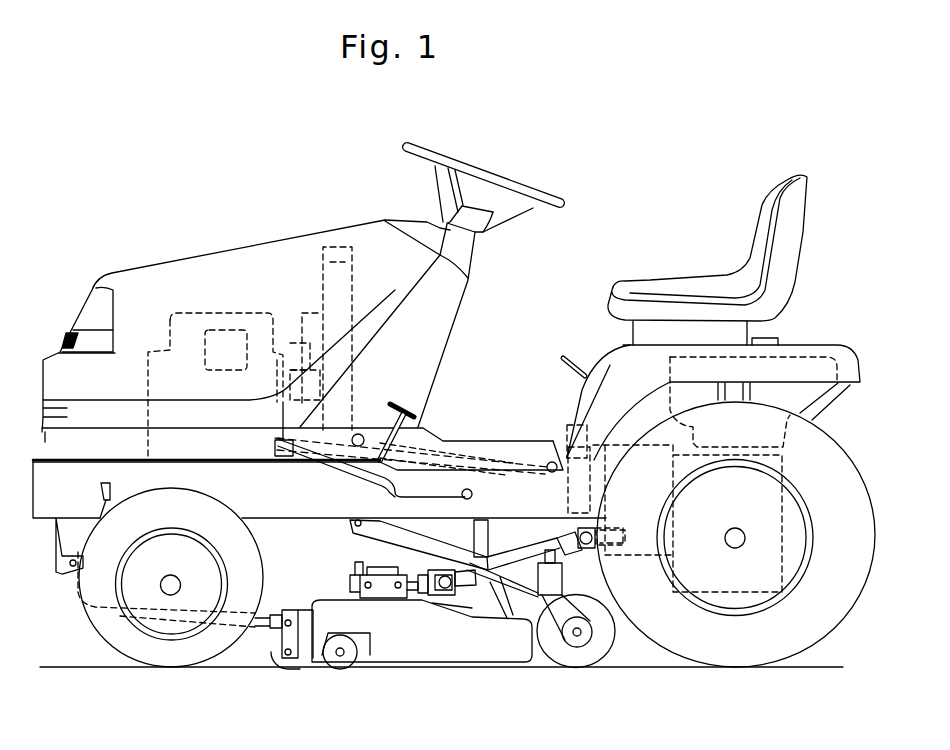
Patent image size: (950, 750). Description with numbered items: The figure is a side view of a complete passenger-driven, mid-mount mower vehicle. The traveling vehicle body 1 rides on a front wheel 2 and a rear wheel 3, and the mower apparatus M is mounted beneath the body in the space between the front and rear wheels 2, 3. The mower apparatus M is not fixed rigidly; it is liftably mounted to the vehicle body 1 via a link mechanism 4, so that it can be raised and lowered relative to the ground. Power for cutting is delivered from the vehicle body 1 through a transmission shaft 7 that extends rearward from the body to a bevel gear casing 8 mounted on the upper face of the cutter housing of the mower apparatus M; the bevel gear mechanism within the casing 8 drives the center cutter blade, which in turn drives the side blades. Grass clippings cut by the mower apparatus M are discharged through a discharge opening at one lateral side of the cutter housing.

The traveling vehicle body 1 is at (214, 245).
The front wheel 2 is at (85, 637).
The rear wheel 3 is at (829, 630).
The link mechanism 4 is at (366, 543).
The transmission shaft 7 is at (520, 548).
The bevel gear casing 8 is at (348, 582).
The mower apparatus M is at (418, 655).